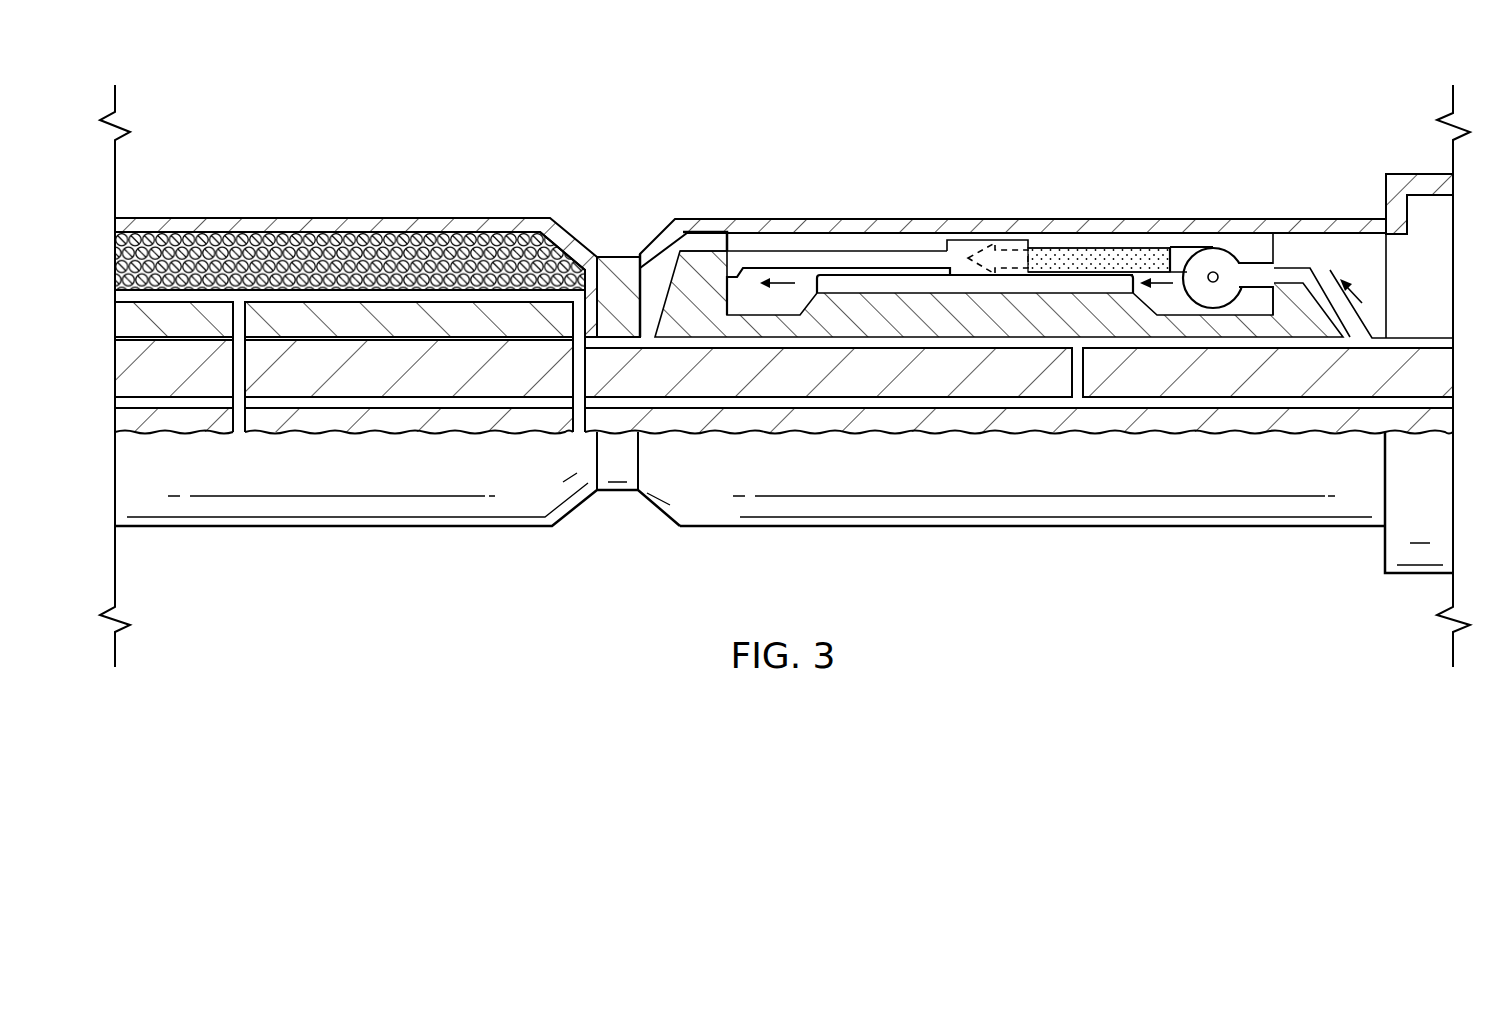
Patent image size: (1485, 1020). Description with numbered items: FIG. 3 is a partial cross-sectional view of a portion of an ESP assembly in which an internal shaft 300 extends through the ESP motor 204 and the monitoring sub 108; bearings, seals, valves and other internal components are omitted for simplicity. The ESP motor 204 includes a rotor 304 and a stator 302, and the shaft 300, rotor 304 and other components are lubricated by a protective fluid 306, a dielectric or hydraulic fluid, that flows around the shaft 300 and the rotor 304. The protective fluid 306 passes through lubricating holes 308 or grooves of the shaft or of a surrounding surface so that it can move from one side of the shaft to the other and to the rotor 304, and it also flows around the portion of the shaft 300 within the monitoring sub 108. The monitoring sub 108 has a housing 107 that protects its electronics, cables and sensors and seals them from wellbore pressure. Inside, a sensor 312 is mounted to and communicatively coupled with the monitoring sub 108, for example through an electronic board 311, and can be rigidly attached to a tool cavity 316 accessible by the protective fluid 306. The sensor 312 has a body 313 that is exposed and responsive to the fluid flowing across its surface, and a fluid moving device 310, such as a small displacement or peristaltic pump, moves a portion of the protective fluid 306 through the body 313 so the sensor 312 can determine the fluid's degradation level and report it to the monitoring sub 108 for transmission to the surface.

The housing 107 is at (653, 236).
The monitoring sub 108 is at (1040, 527).
The ESP motor 204 is at (333, 527).
The internal shaft 300 is at (298, 385).
The stator 302 is at (241, 238).
The rotor 304 is at (152, 325).
The protective fluid 306 is at (575, 300).
The lubricating holes 308 is at (237, 433).
The fluid moving device 310 is at (1203, 258).
The electronic board 311 is at (883, 288).
The sensor 312 is at (1011, 226).
The body 313 is at (957, 250).
The tool cavity 316 is at (808, 280).